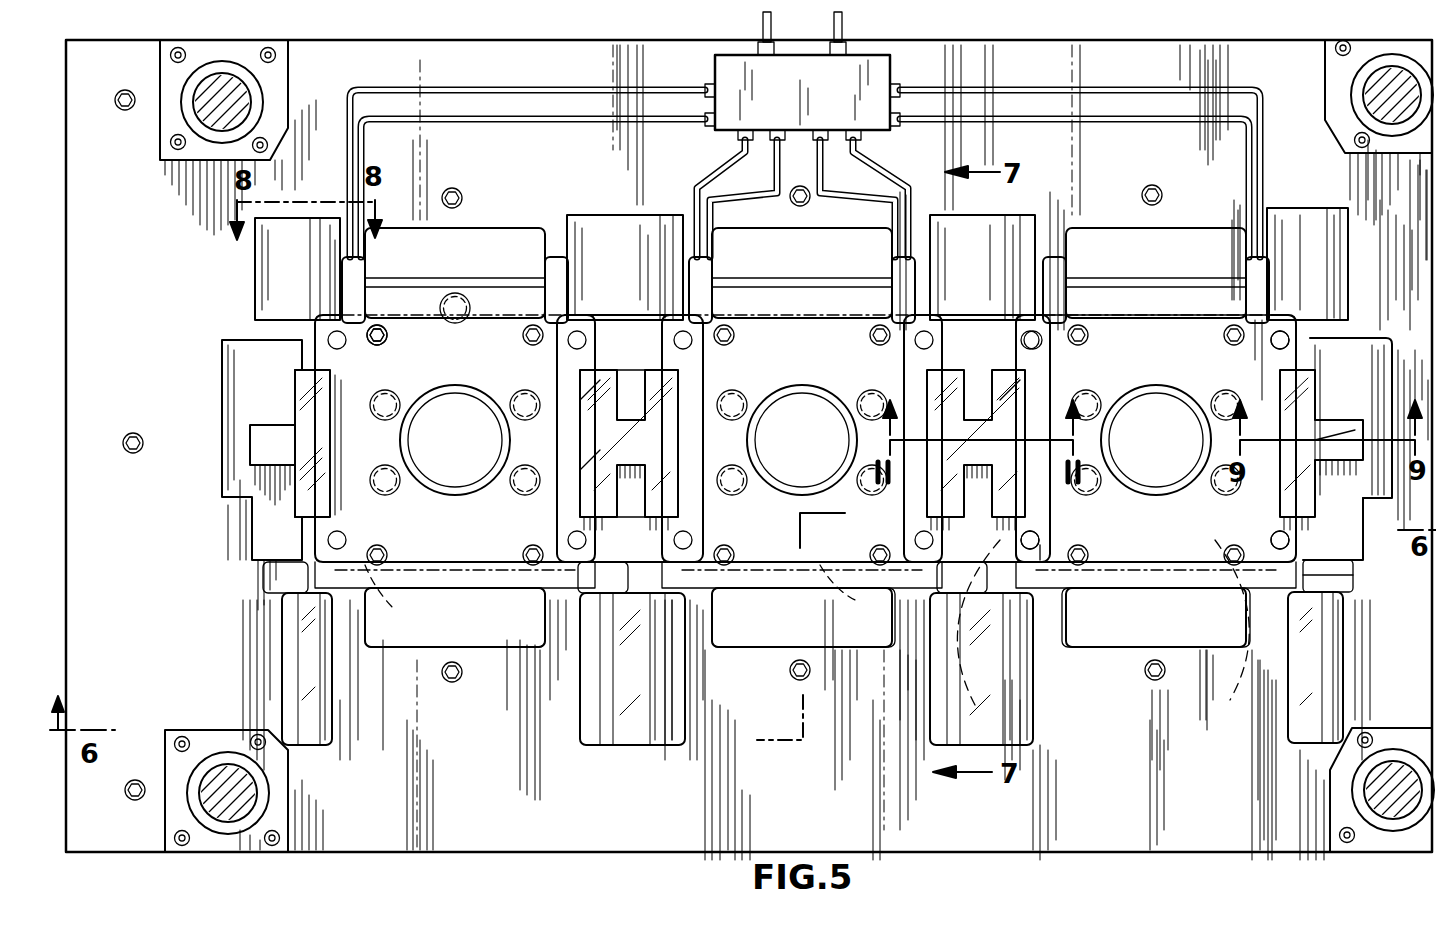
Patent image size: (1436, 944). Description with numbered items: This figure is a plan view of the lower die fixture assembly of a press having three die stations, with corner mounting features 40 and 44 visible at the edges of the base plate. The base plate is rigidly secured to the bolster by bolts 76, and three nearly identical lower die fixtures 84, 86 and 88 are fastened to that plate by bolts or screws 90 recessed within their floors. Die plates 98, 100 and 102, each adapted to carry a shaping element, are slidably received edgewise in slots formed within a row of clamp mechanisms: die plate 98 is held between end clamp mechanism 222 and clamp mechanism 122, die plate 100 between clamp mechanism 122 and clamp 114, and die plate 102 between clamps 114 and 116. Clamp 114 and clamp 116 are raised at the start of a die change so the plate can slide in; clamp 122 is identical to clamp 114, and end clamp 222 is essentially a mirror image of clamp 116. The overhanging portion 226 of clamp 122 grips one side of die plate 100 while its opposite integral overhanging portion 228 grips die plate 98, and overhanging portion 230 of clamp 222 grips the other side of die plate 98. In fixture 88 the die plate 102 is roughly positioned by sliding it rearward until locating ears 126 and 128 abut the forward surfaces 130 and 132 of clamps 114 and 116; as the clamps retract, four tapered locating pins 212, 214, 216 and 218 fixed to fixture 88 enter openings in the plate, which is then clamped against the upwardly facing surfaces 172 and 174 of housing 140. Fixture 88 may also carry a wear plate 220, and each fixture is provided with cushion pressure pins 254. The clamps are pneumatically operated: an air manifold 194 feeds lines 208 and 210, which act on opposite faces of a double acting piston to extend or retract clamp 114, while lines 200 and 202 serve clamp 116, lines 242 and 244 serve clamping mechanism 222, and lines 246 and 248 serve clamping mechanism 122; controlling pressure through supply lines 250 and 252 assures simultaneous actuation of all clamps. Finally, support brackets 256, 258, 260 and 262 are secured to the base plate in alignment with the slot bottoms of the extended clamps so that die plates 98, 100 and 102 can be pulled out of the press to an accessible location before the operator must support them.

The mounting boss 40 is at (252, 100).
The corner mounting plate 44 is at (280, 132).
The bolts 76 is at (125, 112).
The lower die fixture 84 is at (480, 628).
The lower die fixture 86 is at (880, 575).
The lower die fixture 88 is at (1125, 585).
The bolts or screws 90 is at (525, 340).
The die plate 98 is at (455, 617).
The die plate 100 is at (803, 617).
The die plate 102 is at (1244, 623).
The clamp 114 is at (968, 368).
The clamp 116 is at (1312, 396).
The clamp mechanism 122 is at (623, 365).
The locating ear 126 is at (941, 622).
The locating ear 128 is at (1345, 578).
The forward surface 130 is at (1040, 530).
The forward surface 132 is at (1342, 550).
The housing 140 is at (1380, 360).
The upwardly facing surface 172 is at (1040, 508).
The upwardly facing surface 174 is at (1260, 500).
The air manifold 194 is at (880, 76).
The pneumatic line 200 is at (1182, 88).
The pneumatic line 202 is at (1148, 122).
The pneumatic line 208 is at (860, 200).
The pneumatic line 210 is at (860, 160).
The locating pin 212 is at (1292, 522).
The locating pin 214 is at (1040, 562).
The locating pin 216 is at (1038, 335).
The locating pin 218 is at (1288, 342).
The wear plate 220 is at (1168, 378).
The end clamp mechanism 222 is at (268, 386).
The overhanging portion 226 is at (658, 422).
The overhanging portion 228 is at (588, 468).
The overhanging portion 230 is at (316, 437).
The pneumatic line 242 is at (527, 90).
The pneumatic line 244 is at (542, 121).
The pneumatic line 246 is at (722, 168).
The pneumatic line 248 is at (750, 200).
The supply line 250 is at (760, 30).
The supply line 252 is at (842, 30).
The cushion pressure pins 254 is at (462, 296).
The support bracket 256 is at (288, 693).
The support bracket 258 is at (605, 746).
The support bracket 260 is at (948, 748).
The support bracket 262 is at (1336, 664).